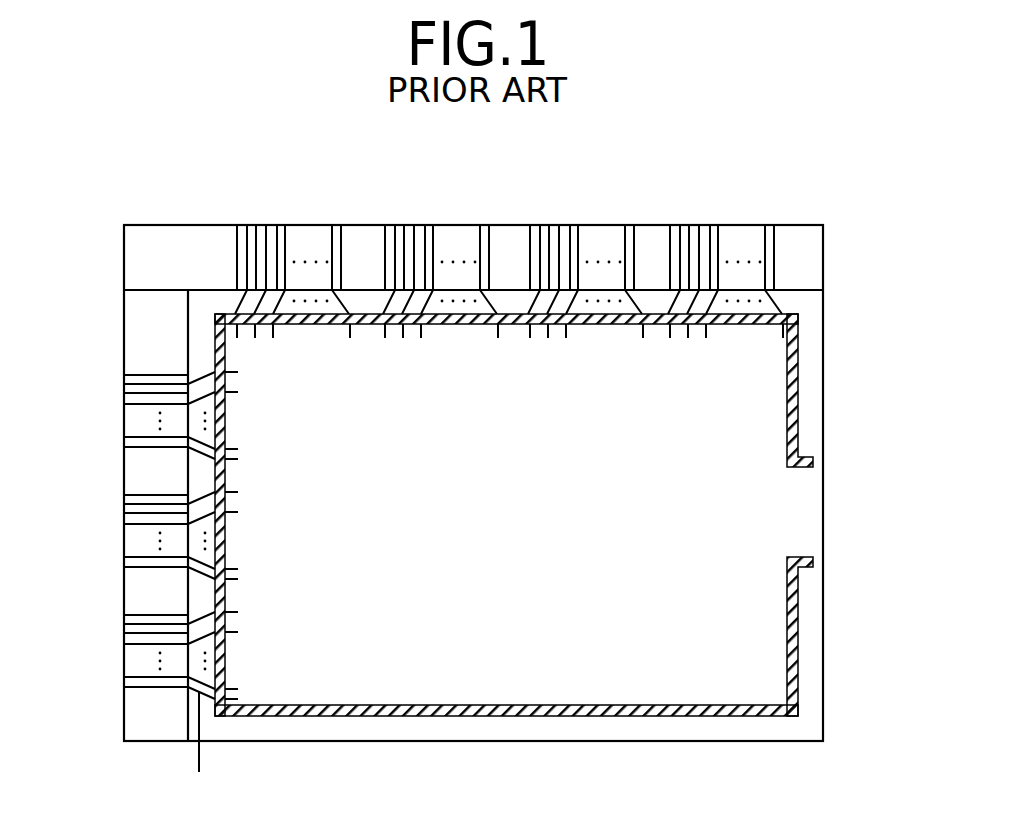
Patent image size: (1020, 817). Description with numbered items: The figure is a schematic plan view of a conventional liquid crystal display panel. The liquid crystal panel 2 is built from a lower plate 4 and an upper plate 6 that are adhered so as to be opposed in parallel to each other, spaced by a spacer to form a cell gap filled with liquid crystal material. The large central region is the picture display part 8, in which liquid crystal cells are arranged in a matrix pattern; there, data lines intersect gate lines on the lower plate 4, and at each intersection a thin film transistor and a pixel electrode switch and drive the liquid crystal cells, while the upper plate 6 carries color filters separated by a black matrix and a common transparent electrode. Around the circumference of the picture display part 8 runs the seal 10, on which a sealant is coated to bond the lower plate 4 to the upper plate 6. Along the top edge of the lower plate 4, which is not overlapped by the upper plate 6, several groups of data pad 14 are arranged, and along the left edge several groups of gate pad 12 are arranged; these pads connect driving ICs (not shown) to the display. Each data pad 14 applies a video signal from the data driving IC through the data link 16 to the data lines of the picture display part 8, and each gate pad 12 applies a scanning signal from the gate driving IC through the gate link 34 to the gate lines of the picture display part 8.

The liquid crystal panel 2 is at (246, 191).
The lower plate 4 is at (832, 263).
The upper plate 6 is at (807, 316).
The picture display part 8 is at (668, 675).
The seal 10 is at (800, 444).
The gate pad 12 is at (151, 535).
The data pad 14 is at (509, 255).
The data link 16 is at (217, 309).
The gate link 34 is at (204, 751).